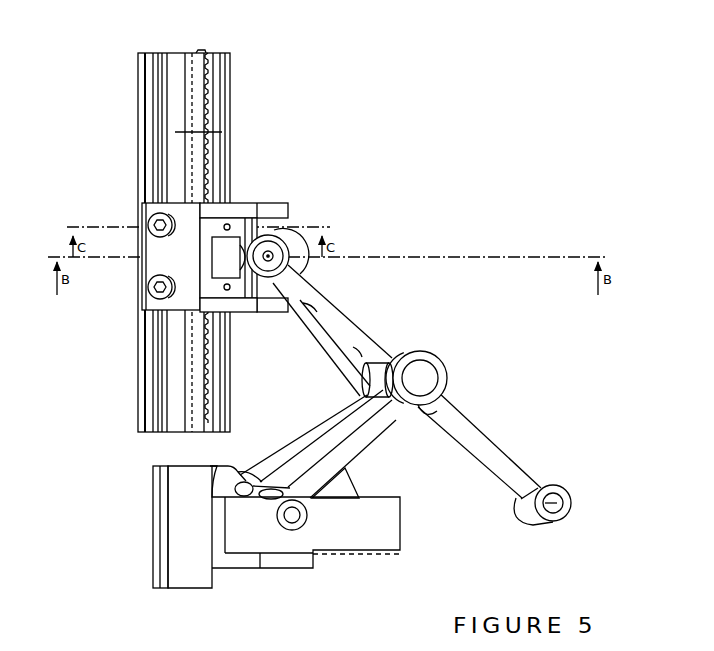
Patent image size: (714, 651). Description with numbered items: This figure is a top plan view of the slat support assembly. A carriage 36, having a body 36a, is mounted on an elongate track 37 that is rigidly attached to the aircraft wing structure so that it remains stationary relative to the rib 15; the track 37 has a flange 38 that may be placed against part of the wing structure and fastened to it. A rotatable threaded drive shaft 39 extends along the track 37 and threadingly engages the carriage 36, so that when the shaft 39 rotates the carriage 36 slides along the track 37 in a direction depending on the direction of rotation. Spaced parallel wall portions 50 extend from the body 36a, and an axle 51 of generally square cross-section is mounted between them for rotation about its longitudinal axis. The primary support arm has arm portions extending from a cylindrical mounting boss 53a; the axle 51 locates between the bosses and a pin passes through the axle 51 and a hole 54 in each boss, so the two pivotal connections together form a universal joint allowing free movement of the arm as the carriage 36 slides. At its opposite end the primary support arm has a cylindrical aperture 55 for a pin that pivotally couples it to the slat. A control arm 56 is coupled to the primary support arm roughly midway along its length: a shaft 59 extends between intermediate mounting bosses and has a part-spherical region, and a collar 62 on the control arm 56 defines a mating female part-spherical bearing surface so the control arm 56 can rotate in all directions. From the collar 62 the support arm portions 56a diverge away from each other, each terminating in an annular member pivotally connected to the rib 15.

The rib 15 is at (179, 546).
The carriage 36 is at (129, 214).
The body 36a is at (145, 266).
The elongate track 37 is at (251, 95).
The flange 38 is at (145, 105).
The threaded drive shaft 39 is at (209, 66).
The wall portions 50 is at (270, 210).
The axle 51 is at (300, 220).
The mounting boss 53a is at (285, 253).
The hole 54 is at (268, 261).
The cylindrical aperture 55 is at (562, 503).
The control arm 56 is at (378, 450).
The support arm portions 56a is at (333, 462).
The shaft 59 is at (422, 378).
The collar 62 is at (405, 350).